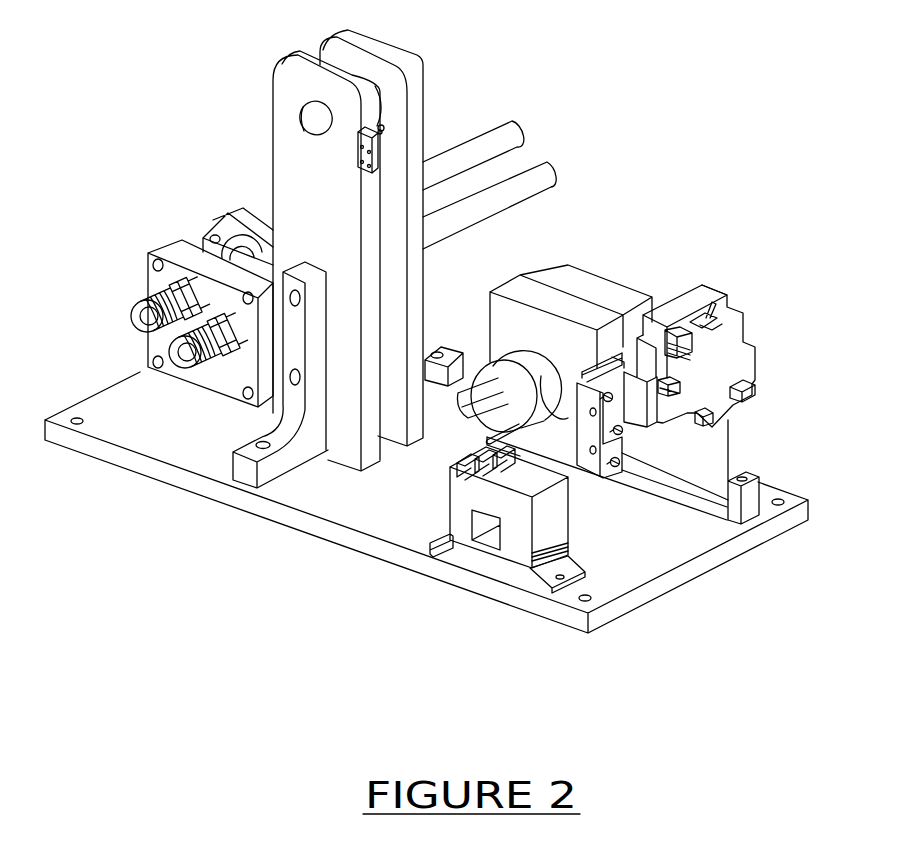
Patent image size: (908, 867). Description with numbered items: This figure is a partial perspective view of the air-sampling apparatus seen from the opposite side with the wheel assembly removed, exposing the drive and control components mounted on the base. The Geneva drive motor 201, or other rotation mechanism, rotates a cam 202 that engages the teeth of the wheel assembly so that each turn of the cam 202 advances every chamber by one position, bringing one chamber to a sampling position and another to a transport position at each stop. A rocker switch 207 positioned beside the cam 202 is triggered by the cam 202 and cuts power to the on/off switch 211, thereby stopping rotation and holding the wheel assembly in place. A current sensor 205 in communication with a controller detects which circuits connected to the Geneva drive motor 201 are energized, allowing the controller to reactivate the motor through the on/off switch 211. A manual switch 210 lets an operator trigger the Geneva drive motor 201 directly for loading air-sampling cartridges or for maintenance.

The Geneva drive motor 201 is at (630, 287).
The cam 202 is at (522, 347).
The current sensor 205 is at (452, 547).
The rocker switch 207 is at (622, 452).
The manual switch 210 is at (758, 368).
The on/off switch 211 is at (713, 293).